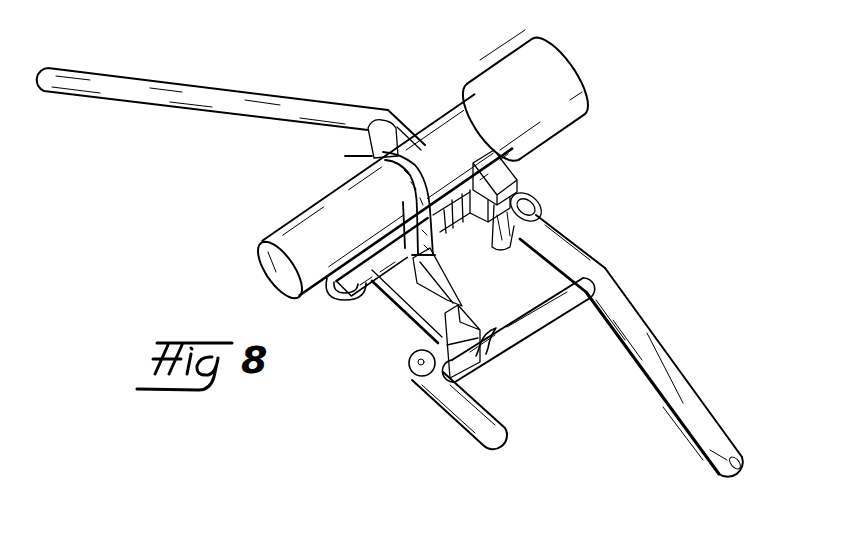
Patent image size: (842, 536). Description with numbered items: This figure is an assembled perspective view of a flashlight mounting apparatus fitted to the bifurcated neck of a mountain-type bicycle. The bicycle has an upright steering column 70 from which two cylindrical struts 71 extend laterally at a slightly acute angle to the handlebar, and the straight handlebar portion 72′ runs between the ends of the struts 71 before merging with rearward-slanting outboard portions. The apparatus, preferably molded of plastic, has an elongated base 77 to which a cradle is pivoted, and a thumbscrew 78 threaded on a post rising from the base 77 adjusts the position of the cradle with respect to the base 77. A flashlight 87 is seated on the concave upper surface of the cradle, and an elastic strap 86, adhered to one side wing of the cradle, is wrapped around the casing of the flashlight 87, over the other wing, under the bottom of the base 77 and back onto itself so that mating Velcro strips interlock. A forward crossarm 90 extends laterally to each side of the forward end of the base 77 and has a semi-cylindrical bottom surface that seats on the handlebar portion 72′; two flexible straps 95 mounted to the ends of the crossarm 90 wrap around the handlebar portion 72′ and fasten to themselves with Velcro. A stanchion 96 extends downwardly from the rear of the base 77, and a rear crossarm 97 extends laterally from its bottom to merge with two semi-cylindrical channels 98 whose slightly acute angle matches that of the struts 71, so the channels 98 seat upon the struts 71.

The steering column 70 is at (440, 410).
The cylindrical struts 71 is at (447, 260).
The handlebar portion 72′ is at (577, 245).
The base 77 is at (368, 292).
The thumbscrew 78 is at (335, 297).
The elastic strap 86 is at (365, 153).
The flashlight 87 is at (287, 223).
The forward crossarm 90 is at (512, 175).
The flexible straps 95 is at (522, 192).
The stanchion 96 is at (403, 320).
The rear crossarm 97 is at (477, 325).
The semi-cylindrical channels 98 is at (482, 358).